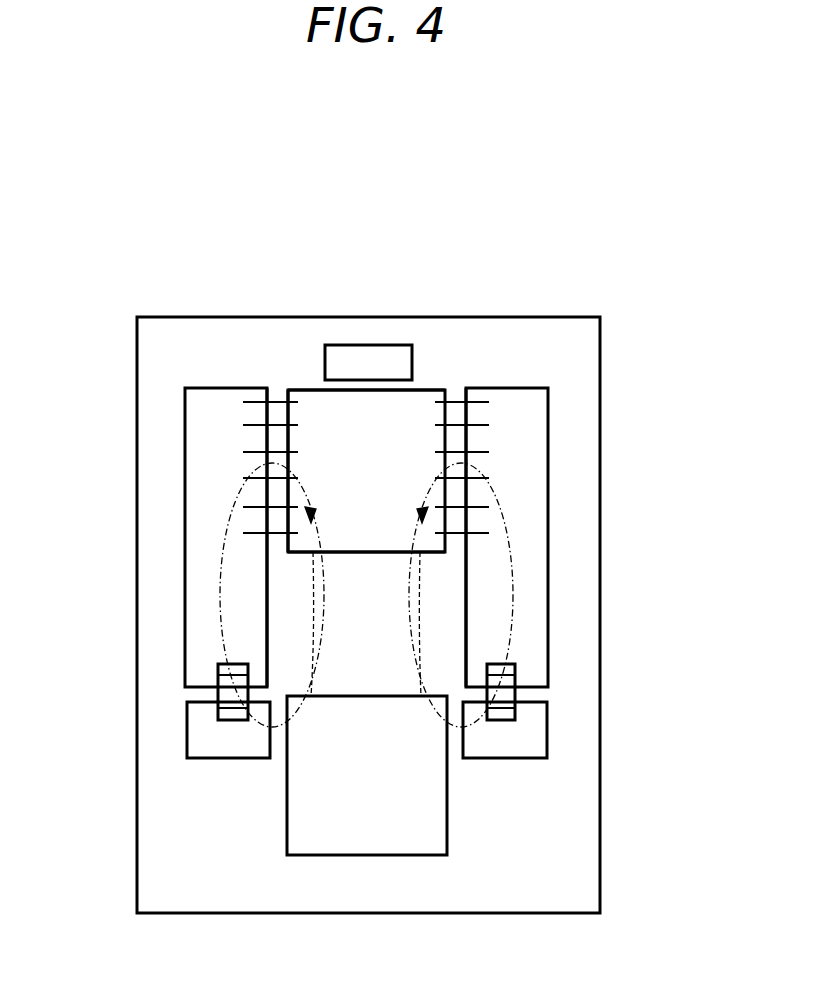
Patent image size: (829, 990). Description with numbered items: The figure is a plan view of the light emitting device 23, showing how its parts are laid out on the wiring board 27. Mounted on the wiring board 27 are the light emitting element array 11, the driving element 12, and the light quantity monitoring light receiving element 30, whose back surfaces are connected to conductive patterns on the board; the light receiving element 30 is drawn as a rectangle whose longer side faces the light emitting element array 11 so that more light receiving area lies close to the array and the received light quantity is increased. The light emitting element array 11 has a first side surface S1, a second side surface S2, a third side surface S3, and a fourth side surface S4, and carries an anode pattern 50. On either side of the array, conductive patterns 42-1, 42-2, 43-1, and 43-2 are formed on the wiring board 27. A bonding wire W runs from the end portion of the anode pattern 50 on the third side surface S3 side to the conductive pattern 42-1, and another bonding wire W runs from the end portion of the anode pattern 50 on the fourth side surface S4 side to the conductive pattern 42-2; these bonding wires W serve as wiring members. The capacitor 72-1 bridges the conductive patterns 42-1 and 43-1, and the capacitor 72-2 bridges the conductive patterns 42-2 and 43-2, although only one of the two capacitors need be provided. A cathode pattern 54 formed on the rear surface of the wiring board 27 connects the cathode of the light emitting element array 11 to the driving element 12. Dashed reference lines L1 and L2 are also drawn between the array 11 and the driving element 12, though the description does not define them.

The light emitting device 23 is at (630, 291).
The wiring board 27 is at (600, 505).
The light quantity monitoring light receiving element 30 is at (363, 345).
The light emitting element array 11 is at (303, 390).
The anode pattern 50 is at (384, 428).
The driving element 12 is at (367, 857).
The conductive pattern 42-1 is at (185, 586).
The conductive pattern 42-2 is at (548, 585).
The conductive pattern 43-1 is at (187, 728).
The conductive pattern 43-2 is at (547, 728).
The capacitor 72-1 is at (218, 692).
The capacitor 72-2 is at (515, 693).
The cathode pattern 54 is at (397, 654).
The bonding wire W is at (259, 401).
The first side surface S1 is at (433, 552).
The second side surface S2 is at (432, 393).
The third side surface S3 is at (298, 440).
The fourth side surface S4 is at (450, 440).
The first distance line L1 is at (332, 624).
The second distance line L2 is at (398, 624).